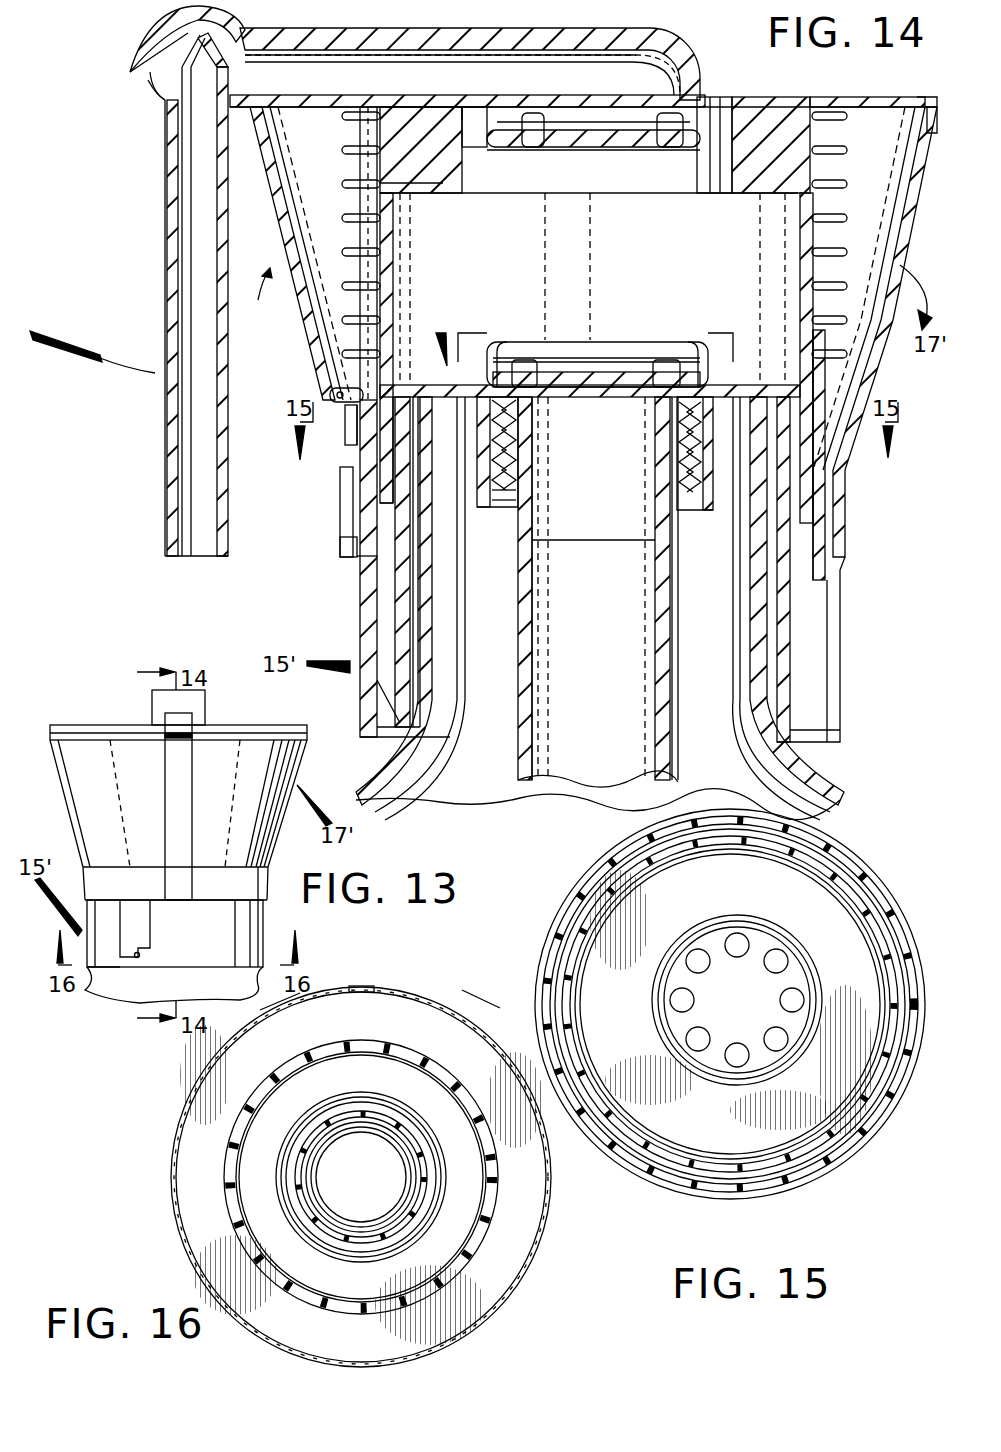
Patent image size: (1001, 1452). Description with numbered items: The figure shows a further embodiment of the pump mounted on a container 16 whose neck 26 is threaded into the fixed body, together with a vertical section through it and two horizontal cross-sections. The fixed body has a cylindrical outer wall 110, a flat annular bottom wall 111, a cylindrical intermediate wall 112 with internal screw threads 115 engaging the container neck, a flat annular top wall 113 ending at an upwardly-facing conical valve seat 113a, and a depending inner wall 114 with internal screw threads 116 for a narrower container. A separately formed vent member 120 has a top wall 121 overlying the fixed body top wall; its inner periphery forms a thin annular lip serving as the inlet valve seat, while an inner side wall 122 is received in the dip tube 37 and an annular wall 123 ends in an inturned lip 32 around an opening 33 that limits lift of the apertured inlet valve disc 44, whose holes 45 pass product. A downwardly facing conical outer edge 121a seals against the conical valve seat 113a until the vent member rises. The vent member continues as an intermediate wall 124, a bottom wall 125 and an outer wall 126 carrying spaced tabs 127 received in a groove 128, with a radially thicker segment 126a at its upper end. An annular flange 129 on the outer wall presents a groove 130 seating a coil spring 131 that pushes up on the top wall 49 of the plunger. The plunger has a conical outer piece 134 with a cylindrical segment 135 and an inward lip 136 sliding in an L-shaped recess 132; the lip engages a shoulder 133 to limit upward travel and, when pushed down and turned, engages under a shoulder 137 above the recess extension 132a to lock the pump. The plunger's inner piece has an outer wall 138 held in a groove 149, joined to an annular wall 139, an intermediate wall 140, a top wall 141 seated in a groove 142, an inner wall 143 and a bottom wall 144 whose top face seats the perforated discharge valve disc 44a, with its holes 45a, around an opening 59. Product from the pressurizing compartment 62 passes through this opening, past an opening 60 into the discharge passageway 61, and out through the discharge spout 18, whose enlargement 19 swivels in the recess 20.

In FIG. 14, the container 16 is at (822, 792).
In FIG. 13, the container 16 is at (130, 1000).
In FIG. 16, the container 16 is at (438, 1062).
In FIG. 14, the discharge spout 18 is at (165, 232).
In FIG. 13, the discharge spout 18 is at (172, 795).
In FIG. 14, the enlargement 19 is at (150, 84).
In FIG. 14, the recess 20 is at (172, 40).
In FIG. 14, the neck 26 is at (450, 676).
In FIG. 14, the radially inturned annular lip 32 is at (698, 342).
In FIG. 13, the radially inturned annular lip 32 is at (197, 942).
In FIG. 14, the opening 33 is at (504, 342).
In FIG. 14, the dip tube 37 is at (607, 680).
In FIG. 16, the dip tube 37 is at (318, 1222).
In FIG. 14, the inlet valve disc 44 is at (614, 372).
In FIG. 15, the inlet valve disc 44 is at (750, 1009).
In FIG. 14, the discharge valve disc 44a is at (570, 128).
In FIG. 14, the holes 45 is at (524, 372).
In FIG. 15, the holes 45 is at (765, 965).
In FIG. 14, the upper holes 45a is at (556, 126).
In FIG. 14, the top wall 49 is at (300, 108).
In FIG. 13, the top wall 49 is at (264, 738).
In FIG. 14, the opening 59 is at (660, 150).
In FIG. 14, the opening 60 is at (604, 108).
In FIG. 14, the discharge passageway 61 is at (386, 77).
In FIG. 14, the pressurizing compartment 62 is at (612, 247).
In FIG. 14, the outer wall 110 is at (362, 684).
In FIG. 14, the bottom wall 111 is at (378, 742).
In FIG. 16, the bottom wall 111 is at (215, 1179).
In FIG. 14, the intermediate wall 112 is at (412, 598).
In FIG. 14, the top wall 113 is at (484, 452).
In FIG. 16, the top wall 113 is at (380, 1077).
In FIG. 14, the conical valve seat 113a is at (520, 384).
In FIG. 14, the inner wall 114 is at (494, 440).
In FIG. 16, the inner wall 114 is at (290, 1123).
In FIG. 14, the internal screw threads 115 is at (420, 408).
In FIG. 14, the internal screw threads 116 is at (496, 500).
In FIG. 16, the internal screw threads 116 is at (285, 1168).
In FIG. 14, the vent member 120 is at (461, 332).
In FIG. 14, the top wall 121 is at (772, 385).
In FIG. 15, the top wall 121 is at (845, 933).
In FIG. 14, the conical outer edge 121a is at (668, 398).
In FIG. 14, the inner side wall 122 is at (540, 497).
In FIG. 16, the inner side wall 122 is at (330, 1216).
In FIG. 14, the annular wall 123 is at (708, 355).
In FIG. 14, the intermediate wall 124 is at (398, 607).
In FIG. 14, the bottom wall 125 is at (380, 714).
In FIG. 14, the outer wall 126 is at (373, 644).
In FIG. 15, the outer wall 126 is at (635, 1171).
In FIG. 14, the radially thicker segment 126a is at (380, 300).
In FIG. 14, the tabs 127 is at (360, 425).
In FIG. 15, the tabs 127 is at (590, 910).
In FIG. 14, the cylindrical groove 128 is at (355, 412).
In FIG. 15, the cylindrical groove 128 is at (775, 1168).
In FIG. 14, the annular flange 129 is at (335, 394).
In FIG. 14, the annular groove 130 is at (338, 380).
In FIG. 14, the coil spring 131 is at (845, 214).
In FIG. 14, the recess 132 is at (360, 572).
In FIG. 16, the recess 132 is at (410, 1001).
In FIG. 13, the recess extension 132a is at (130, 960).
In FIG. 14, the shoulder 133 is at (347, 548).
In FIG. 14, the conical outer piece 134 is at (265, 298).
In FIG. 14, the cylindrical segment 135 is at (340, 506).
In FIG. 14, the lip 136 is at (368, 557).
In FIG. 16, the lip 136 is at (365, 986).
In FIG. 13, the shoulder 137 is at (137, 952).
In FIG. 16, the shoulder 137 is at (272, 1011).
In FIG. 14, the outer wall 138 is at (800, 254).
In FIG. 14, the annular wall 139 is at (408, 192).
In FIG. 14, the intermediate wall 140 is at (443, 156).
In FIG. 14, the top wall 141 is at (468, 107).
In FIG. 14, the groove 142 is at (460, 112).
In FIG. 14, the inner wall 143 is at (488, 120).
In FIG. 14, the bottom wall 144 is at (526, 150).
In FIG. 14, the groove 149 is at (792, 97).